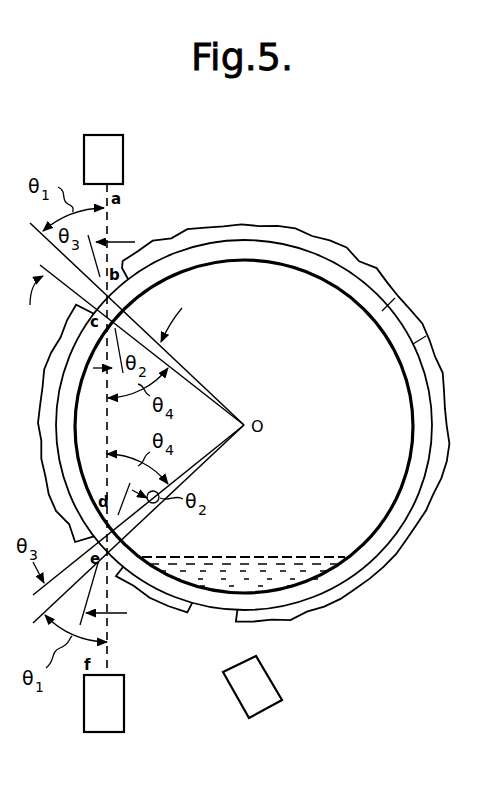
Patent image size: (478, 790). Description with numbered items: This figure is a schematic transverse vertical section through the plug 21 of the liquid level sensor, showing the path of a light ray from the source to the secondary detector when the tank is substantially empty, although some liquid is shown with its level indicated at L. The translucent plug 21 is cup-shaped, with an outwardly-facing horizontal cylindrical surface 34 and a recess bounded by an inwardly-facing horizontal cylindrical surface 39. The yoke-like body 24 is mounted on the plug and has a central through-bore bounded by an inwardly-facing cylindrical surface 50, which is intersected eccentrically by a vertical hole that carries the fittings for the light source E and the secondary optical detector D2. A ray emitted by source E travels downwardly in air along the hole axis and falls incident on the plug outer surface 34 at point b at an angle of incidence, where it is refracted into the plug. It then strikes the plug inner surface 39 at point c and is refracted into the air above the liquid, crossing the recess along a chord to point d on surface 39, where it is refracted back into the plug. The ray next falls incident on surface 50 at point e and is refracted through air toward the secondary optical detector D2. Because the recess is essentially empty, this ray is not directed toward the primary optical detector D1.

The plug 21 is at (321, 254).
The yoke-like body 24 is at (380, 273).
The outwardly-facing horizontal cylindrical surface 34 is at (428, 339).
The inwardly-facing horizontal cylindrical surface 39 is at (404, 371).
The inwardly-facing horizontal cylindrical surface 50 is at (378, 312).
The light source E is at (103, 159).
The primary optical detector D1 is at (252, 687).
The secondary optical detector D2 is at (104, 703).
The liquid level L is at (300, 556).